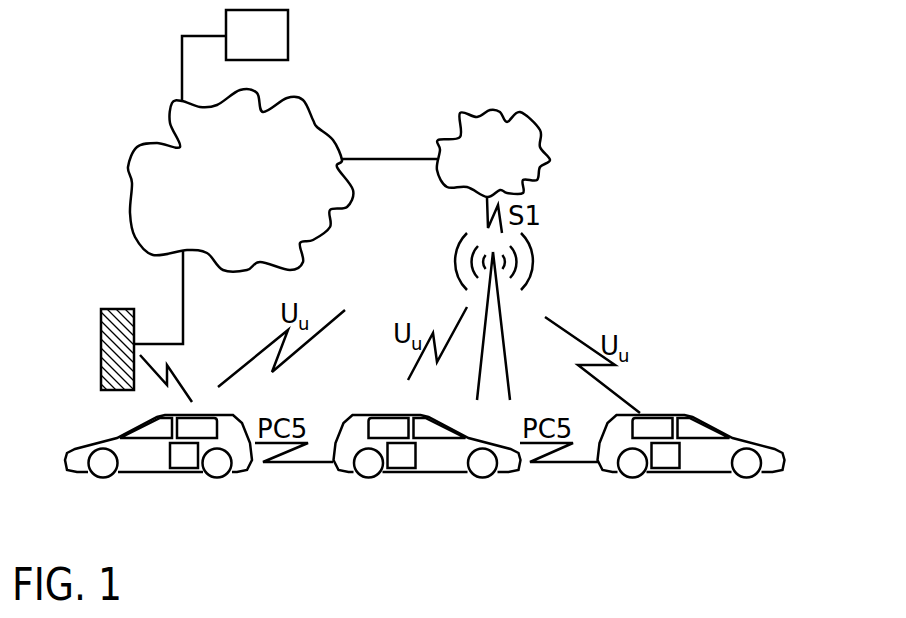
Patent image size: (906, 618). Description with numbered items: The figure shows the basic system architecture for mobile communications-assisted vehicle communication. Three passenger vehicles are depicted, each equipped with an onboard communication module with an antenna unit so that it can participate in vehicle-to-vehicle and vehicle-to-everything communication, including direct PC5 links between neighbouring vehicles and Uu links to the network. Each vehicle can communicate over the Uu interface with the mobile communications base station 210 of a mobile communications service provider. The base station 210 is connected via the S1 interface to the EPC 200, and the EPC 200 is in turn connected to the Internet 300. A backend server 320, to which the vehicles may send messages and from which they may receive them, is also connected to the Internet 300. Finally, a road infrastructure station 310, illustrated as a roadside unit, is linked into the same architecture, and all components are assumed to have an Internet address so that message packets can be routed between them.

The EPC 200 is at (507, 130).
The mobile communications base station 210 is at (500, 308).
The Internet 300 is at (300, 142).
The road infrastructure station 310 is at (117, 310).
The backend server 320 is at (288, 35).